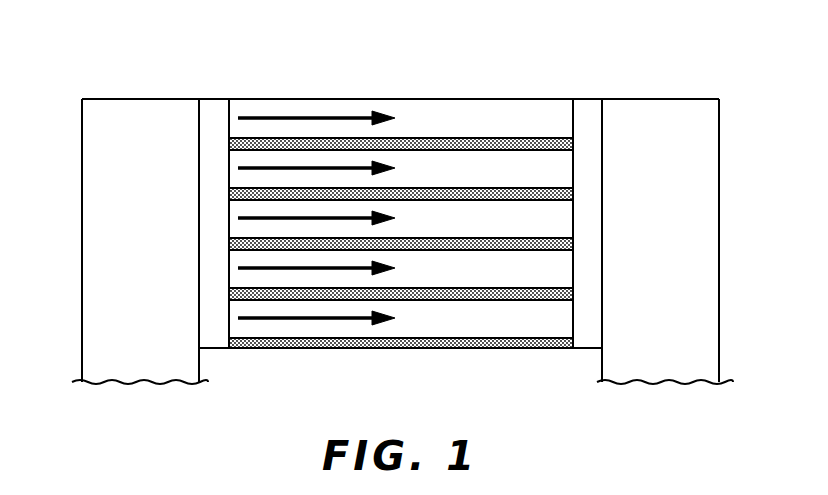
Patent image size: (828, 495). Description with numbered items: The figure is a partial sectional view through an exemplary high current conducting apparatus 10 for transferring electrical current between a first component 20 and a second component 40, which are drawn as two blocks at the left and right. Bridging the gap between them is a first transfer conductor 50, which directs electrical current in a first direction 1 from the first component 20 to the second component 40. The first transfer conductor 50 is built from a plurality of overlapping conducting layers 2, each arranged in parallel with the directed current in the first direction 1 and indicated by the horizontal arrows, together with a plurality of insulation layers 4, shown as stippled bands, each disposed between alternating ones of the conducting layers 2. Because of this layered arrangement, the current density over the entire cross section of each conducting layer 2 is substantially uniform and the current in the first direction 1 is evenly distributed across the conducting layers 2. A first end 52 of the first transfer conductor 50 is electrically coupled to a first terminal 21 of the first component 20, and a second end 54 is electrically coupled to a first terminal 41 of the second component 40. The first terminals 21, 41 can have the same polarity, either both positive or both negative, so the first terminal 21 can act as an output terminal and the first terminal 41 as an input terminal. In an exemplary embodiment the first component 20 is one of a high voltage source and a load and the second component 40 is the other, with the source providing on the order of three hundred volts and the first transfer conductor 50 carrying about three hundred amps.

The high current conducting apparatus 10 is at (153, 75).
The first component 20 is at (128, 223).
The second component 40 is at (648, 223).
The first transfer conductor 50 is at (262, 98).
The first terminal of the first component 21 is at (213, 117).
The first terminal of the second component 41 is at (587, 120).
The first direction 1 is at (322, 218).
The conducting layers 2 is at (421, 328).
The insulation layers 4 is at (507, 238).
The first end of the first transfer conductor 52 is at (229, 218).
The second end of the first transfer conductor 54 is at (573, 218).